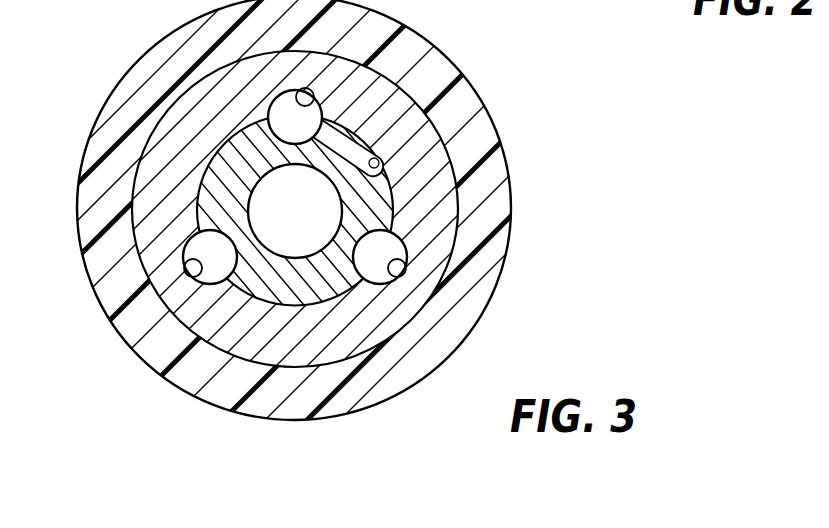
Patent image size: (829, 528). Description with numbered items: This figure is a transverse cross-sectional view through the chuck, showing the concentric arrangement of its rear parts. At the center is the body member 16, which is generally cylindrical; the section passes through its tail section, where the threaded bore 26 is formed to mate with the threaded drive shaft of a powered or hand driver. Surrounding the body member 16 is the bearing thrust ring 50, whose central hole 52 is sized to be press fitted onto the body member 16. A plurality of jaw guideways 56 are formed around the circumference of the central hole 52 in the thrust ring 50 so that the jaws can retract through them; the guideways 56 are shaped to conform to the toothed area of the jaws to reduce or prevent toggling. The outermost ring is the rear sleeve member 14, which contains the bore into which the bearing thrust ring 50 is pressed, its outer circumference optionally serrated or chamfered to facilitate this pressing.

The rear sleeve member 14 is at (492, 303).
The body member 16 is at (393, 211).
The threaded bore 26 is at (331, 181).
The bearing thrust ring 50 is at (443, 128).
The central hole 52 is at (384, 165).
The jaw guideways 56 is at (312, 100).